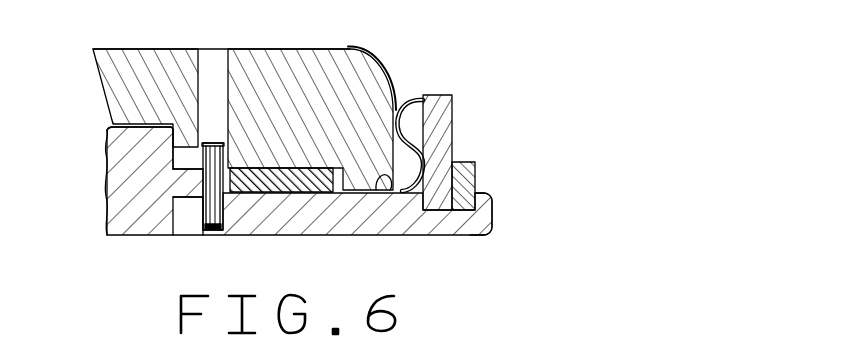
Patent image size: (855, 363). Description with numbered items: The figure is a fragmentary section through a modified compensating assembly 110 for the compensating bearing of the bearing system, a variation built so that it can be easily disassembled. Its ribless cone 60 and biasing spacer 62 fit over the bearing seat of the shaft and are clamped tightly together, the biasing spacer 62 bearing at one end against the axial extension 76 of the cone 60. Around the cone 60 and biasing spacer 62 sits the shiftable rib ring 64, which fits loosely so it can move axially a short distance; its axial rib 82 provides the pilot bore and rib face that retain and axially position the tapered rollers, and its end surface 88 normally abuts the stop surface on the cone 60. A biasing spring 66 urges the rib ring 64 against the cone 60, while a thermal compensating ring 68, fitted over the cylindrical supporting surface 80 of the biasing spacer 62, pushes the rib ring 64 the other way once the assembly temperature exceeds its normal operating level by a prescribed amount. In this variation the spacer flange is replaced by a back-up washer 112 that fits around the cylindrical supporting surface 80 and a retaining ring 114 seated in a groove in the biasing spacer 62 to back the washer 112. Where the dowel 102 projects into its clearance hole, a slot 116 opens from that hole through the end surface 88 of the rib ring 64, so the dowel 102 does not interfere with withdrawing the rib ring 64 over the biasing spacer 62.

The ribless cone 60 is at (142, 236).
The biasing spacer 62 is at (450, 228).
The shiftable rib ring 64 is at (282, 50).
The biasing spring 66 is at (410, 98).
The thermal compensating ring 68 is at (307, 190).
The axial extension 76 is at (192, 182).
The cylindrical supporting surface 80 is at (388, 184).
The axial rib 82 is at (128, 76).
The end surface 88 is at (175, 144).
The dowel 102 is at (215, 204).
The modified compensating assembly 110 is at (452, 58).
The back-up washer 112 is at (443, 112).
The retaining ring 114 is at (470, 172).
The slot 116 is at (183, 160).